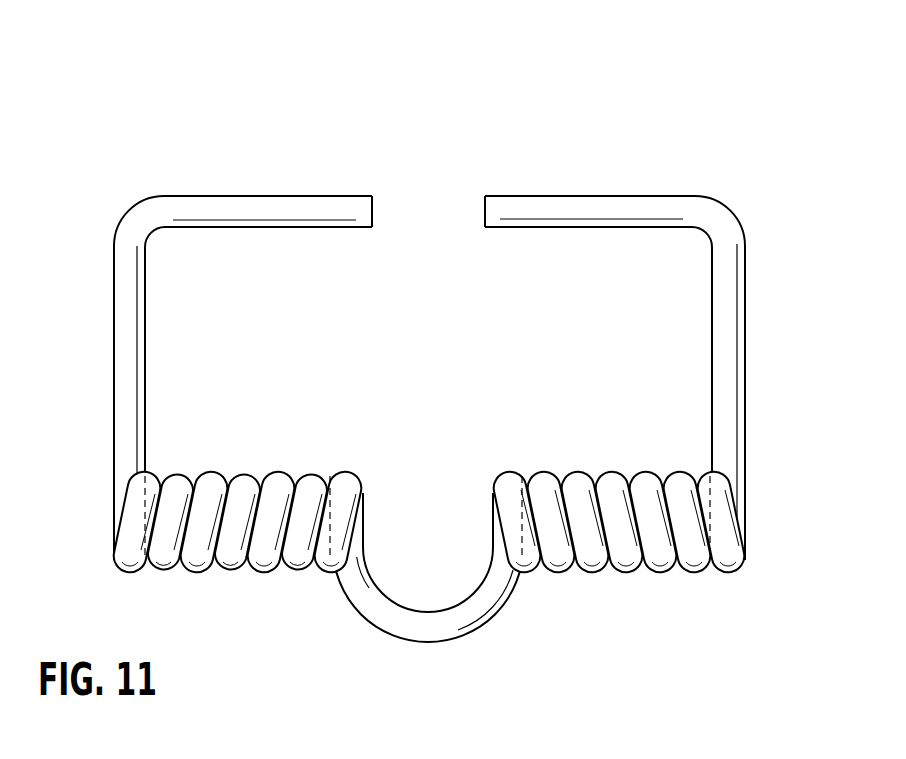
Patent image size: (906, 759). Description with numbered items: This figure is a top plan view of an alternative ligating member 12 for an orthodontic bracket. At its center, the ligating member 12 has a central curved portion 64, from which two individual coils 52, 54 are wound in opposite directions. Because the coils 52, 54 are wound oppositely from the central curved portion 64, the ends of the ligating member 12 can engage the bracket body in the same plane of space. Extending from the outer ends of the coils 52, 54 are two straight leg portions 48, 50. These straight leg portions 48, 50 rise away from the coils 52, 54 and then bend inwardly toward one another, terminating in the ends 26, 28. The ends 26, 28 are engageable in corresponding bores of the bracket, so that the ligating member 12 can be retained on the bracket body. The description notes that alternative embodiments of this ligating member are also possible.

The ligating member 12 is at (678, 103).
The end 26 is at (372, 208).
The end 28 is at (485, 208).
The straight leg portion 48 is at (113, 385).
The straight leg portion 50 is at (747, 342).
The coil 52 is at (228, 573).
The coil 54 is at (628, 573).
The central curved portion 64 is at (428, 645).